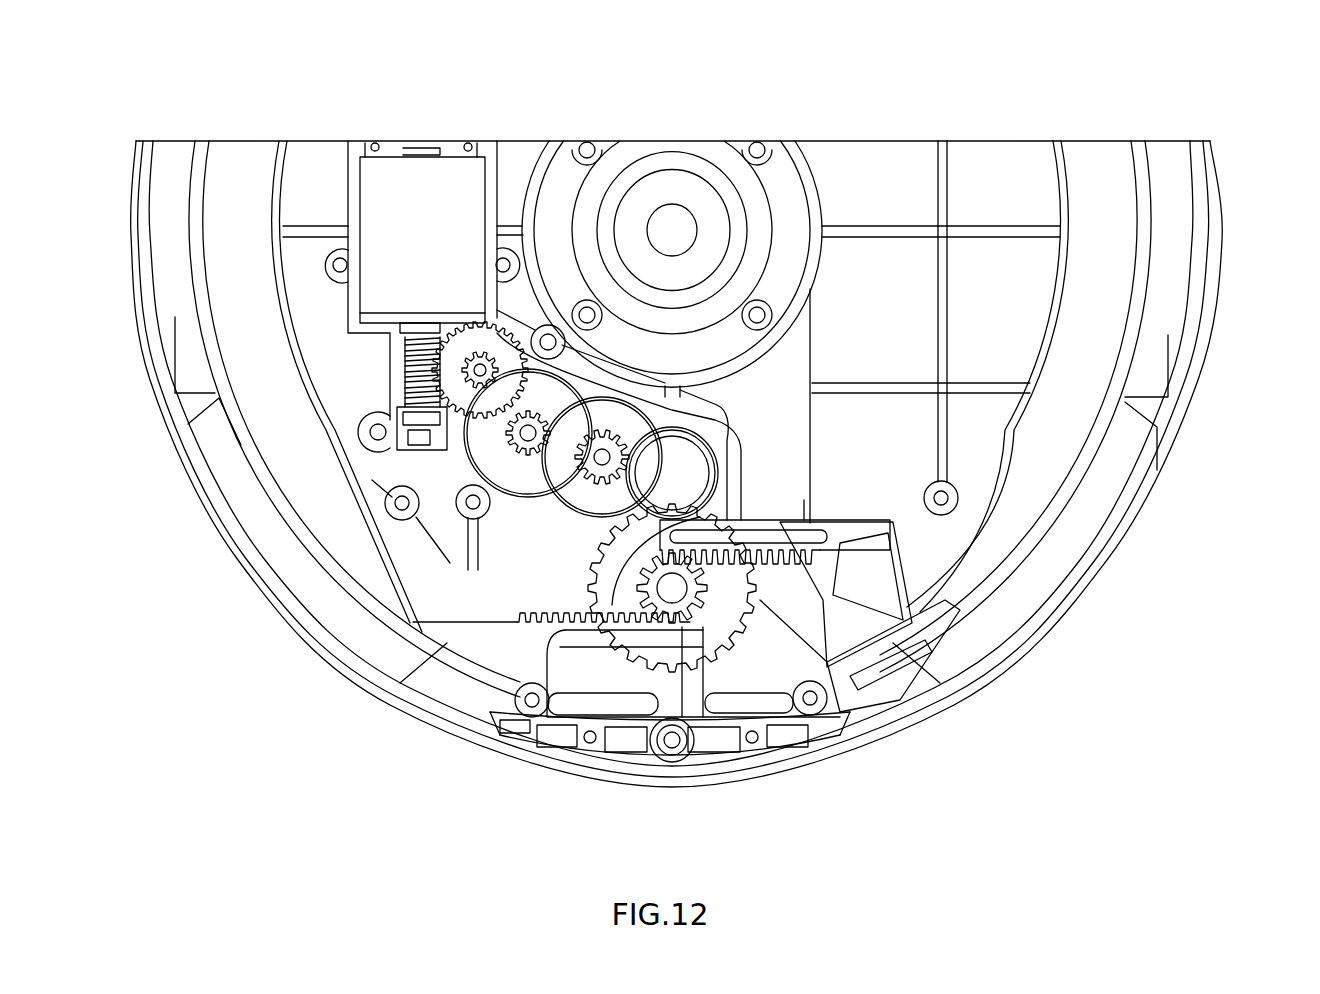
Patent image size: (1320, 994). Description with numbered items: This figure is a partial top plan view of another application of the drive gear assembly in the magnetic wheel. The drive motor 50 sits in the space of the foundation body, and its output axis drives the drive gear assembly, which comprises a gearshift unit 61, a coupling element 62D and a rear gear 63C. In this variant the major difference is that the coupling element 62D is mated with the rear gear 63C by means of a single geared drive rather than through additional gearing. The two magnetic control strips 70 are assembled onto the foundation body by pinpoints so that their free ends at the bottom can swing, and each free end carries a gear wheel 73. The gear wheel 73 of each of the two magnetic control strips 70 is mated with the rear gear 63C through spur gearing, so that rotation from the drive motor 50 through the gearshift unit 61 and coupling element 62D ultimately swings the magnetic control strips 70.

The drive motor 50 is at (436, 204).
The gearshift unit 61 is at (460, 463).
The coupling element 62D is at (718, 438).
The rear gear 63C is at (748, 632).
The magnetic control strips 70 is at (208, 313).
The gear wheel 73 is at (712, 555).